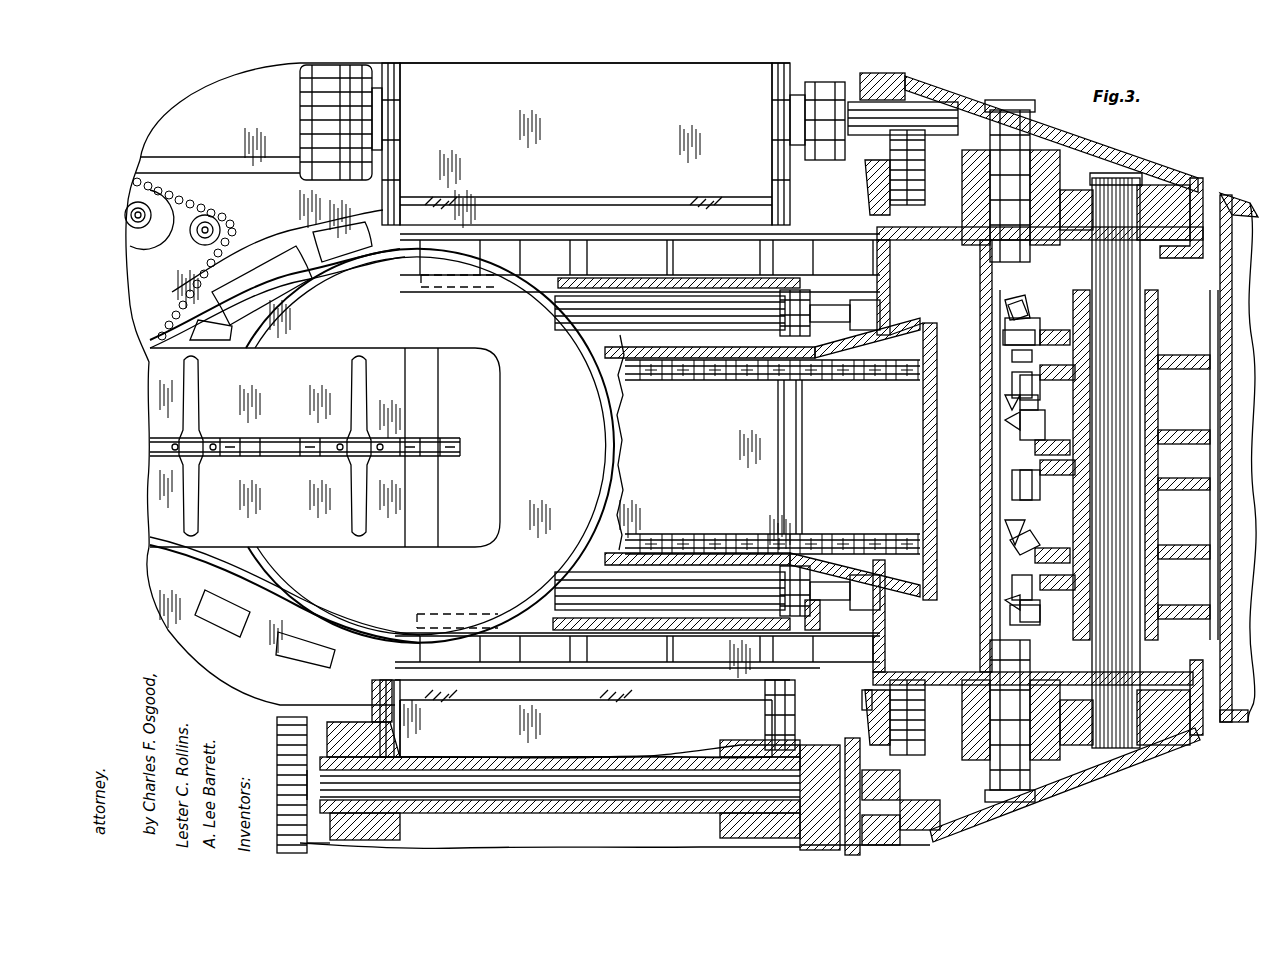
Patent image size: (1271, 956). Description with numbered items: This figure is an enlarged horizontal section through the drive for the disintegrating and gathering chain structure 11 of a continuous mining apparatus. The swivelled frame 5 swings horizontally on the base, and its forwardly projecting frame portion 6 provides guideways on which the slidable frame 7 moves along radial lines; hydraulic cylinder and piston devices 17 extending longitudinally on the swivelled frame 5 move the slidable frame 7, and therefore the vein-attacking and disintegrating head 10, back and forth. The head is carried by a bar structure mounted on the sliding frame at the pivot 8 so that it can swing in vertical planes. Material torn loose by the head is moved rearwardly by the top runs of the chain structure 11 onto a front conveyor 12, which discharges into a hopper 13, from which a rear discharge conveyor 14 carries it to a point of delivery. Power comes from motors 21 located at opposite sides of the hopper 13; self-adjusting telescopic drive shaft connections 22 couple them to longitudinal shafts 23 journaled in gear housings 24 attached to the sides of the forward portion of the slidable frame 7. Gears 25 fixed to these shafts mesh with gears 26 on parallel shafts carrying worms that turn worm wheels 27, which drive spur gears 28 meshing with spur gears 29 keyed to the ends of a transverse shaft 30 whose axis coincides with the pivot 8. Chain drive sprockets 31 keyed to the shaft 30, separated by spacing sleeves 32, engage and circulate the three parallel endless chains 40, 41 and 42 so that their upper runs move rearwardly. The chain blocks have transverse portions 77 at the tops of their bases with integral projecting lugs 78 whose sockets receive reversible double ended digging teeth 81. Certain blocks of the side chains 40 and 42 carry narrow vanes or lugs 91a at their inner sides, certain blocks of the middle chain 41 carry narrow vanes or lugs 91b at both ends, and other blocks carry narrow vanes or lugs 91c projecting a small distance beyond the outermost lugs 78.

The swivelled frame 5 is at (375, 190).
The forwardly projecting frame portion 6 is at (755, 688).
The slidable frame 7 is at (920, 322).
The pivot 8 is at (1012, 358).
The vein-attacking and disintegrating head 10 is at (1228, 200).
The disintegrating and gathering chain structure 11 is at (980, 590).
The front conveyor 12 is at (805, 483).
The hopper 13 is at (614, 462).
The rear discharge conveyor 14 is at (190, 482).
The hydraulic cylinder and piston devices 17 is at (680, 340).
The motors 21 is at (718, 185).
The self-adjusting telescopic drive shaft connections 22 is at (805, 112).
The longitudinal shafts 23 is at (935, 112).
The gear housings 24 is at (1050, 125).
The gears 25 is at (905, 100).
The gears 26 is at (912, 185).
The worm wheels 27 is at (1085, 150).
The spur gears 28 is at (975, 235).
The spur gears 29 is at (1165, 185).
The transverse shaft 30 is at (1090, 500).
The chain drive sprockets 31 is at (1010, 332).
The spacing sleeves 32 is at (1158, 405).
The endless chain 40 is at (1003, 318).
The endless chain 41 is at (1012, 425).
The endless chain 42 is at (1010, 605).
The transverse portions 77 is at (1008, 362).
The projecting lugs 78 is at (1000, 310).
The reversible double ended digging teeth 81 is at (1008, 305).
The narrow vanes or lugs 91a is at (1030, 388).
The narrow vanes or lugs 91b is at (1030, 402).
The narrow vanes or lugs 91c is at (1012, 530).